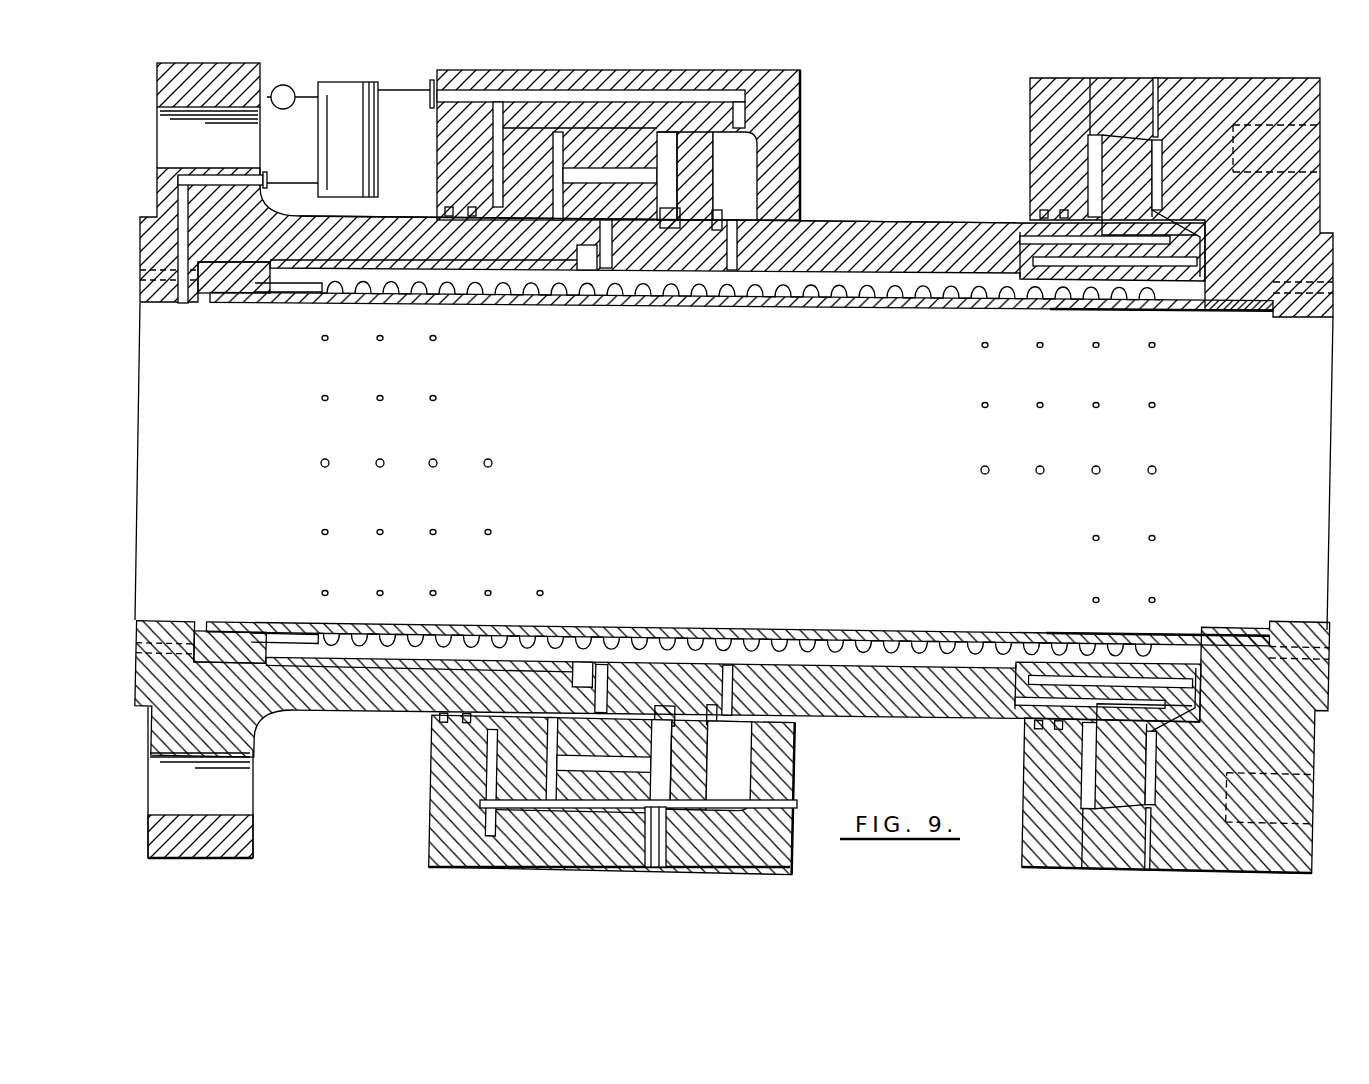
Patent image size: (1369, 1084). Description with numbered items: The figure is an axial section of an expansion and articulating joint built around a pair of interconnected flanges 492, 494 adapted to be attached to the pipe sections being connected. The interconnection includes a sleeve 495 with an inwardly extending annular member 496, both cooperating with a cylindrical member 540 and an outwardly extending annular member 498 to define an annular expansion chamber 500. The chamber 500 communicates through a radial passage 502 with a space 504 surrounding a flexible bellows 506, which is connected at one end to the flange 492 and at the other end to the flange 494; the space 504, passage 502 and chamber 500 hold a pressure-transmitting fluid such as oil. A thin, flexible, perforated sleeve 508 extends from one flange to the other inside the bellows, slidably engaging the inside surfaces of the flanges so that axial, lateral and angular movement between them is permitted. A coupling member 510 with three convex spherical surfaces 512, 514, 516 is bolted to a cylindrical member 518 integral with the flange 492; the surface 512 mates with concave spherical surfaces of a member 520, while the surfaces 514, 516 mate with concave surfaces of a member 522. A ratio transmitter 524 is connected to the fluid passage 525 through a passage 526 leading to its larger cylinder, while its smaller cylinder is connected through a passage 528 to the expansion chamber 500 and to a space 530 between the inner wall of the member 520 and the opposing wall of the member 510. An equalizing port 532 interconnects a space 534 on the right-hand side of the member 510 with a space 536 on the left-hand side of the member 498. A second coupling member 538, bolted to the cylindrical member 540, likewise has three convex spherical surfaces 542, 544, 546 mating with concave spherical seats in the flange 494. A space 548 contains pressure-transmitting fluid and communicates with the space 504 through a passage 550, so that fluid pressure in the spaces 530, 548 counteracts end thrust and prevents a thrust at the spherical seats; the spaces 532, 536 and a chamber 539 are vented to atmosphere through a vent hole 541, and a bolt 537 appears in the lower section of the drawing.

The flange 492 is at (158, 196).
The flange 494 is at (818, 100).
The sleeve 495 is at (749, 80).
The inwardly extending annular member 496 is at (803, 187).
The outwardly extending annular member 498 is at (700, 188).
The annular expansion chamber 500 is at (750, 157).
The radial passage 502 is at (737, 249).
The space 504 is at (890, 283).
The flexible bellows 506 is at (818, 306).
The thin, flexible, perforated sleeve 508 is at (730, 308).
The member 510 is at (456, 238).
The convex spherical surface 512 is at (472, 206).
The convex spherical surface 514 is at (546, 139).
The convex spherical surface 516 is at (590, 217).
The cylindrical member 518 is at (372, 222).
The member 520 is at (442, 181).
The member 522 is at (597, 76).
The ratio transmitter 524 is at (346, 88).
The fluid passage 525 is at (150, 431).
The passage 526 is at (188, 300).
The passage 528 is at (404, 92).
The space 530 is at (498, 145).
The equalizing port 532 is at (572, 196).
The space 534 is at (562, 159).
The space 536 is at (662, 166).
The bolt 537 is at (660, 838).
The second coupling member 538 is at (1052, 250).
The chamber 539 is at (1160, 154).
The cylindrical member 540 is at (975, 234).
The vent hole 541 is at (1158, 96).
The convex spherical surface 542 is at (1054, 214).
The convex spherical surface 544 is at (1124, 135).
The convex spherical surface 546 is at (1180, 217).
The space 548 is at (1092, 163).
The passage 550 is at (1153, 247).